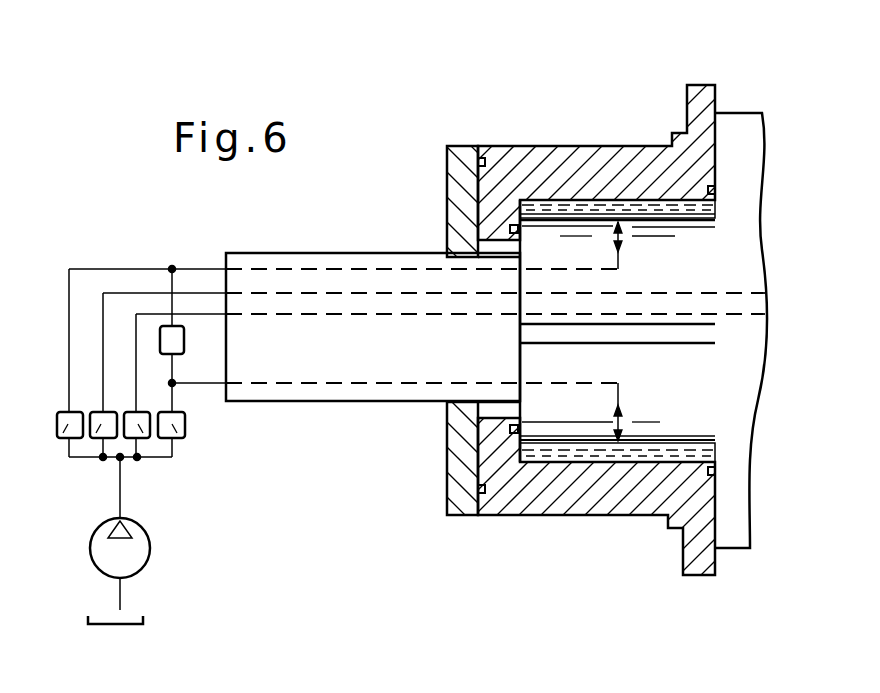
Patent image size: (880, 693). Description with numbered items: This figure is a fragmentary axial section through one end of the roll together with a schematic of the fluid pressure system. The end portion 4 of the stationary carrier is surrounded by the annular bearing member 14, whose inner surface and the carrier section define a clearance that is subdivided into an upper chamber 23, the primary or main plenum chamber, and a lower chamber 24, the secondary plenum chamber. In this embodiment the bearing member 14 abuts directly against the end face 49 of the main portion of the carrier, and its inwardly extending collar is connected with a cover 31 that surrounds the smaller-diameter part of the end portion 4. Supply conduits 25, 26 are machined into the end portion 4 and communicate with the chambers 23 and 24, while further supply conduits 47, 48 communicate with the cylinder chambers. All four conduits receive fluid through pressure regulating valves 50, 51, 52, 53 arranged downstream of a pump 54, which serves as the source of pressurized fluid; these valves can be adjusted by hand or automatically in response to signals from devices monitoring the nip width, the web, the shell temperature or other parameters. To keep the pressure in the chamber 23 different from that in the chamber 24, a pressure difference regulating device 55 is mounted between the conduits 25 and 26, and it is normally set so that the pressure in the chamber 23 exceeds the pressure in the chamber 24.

The end portion 4 is at (363, 348).
The annular bearing member 14 is at (505, 157).
The upper chamber 23 is at (593, 208).
The lower chamber 24 is at (597, 450).
The supply conduit 25 is at (263, 269).
The supply conduit 26 is at (297, 383).
The cover 31 is at (458, 478).
The supply conduit 47 is at (298, 293).
The supply conduit 48 is at (343, 314).
The end face 49 is at (718, 140).
The pressure regulating valve 50 is at (63, 428).
The pressure regulating valve 51 is at (97, 428).
The pressure regulating valve 52 is at (140, 428).
The pressure regulating valve 53 is at (175, 428).
The pump 54 is at (137, 553).
The pressure difference regulating device 55 is at (167, 340).